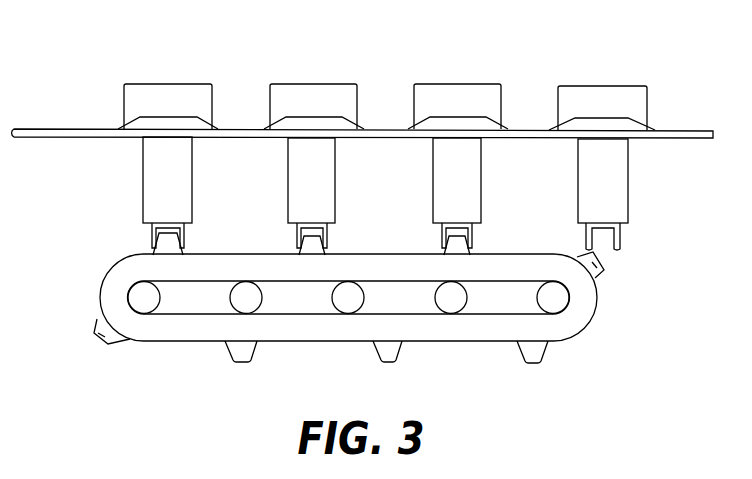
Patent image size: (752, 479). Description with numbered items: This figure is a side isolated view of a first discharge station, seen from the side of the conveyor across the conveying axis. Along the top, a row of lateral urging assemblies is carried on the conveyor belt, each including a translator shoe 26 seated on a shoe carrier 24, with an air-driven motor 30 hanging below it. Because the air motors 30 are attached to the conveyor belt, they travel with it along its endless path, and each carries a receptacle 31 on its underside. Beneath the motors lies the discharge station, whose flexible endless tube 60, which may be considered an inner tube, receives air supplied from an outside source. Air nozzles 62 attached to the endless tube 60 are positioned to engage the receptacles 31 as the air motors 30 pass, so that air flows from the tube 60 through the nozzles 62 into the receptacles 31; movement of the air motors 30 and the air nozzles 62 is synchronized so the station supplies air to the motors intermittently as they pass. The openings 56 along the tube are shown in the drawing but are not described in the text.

The shoe carrier 24 is at (442, 118).
The translator shoe 26 is at (458, 95).
The air-driven motor 30 is at (153, 175).
The receptacle 31 is at (157, 232).
The hole 56 is at (147, 303).
The flexible endless tube 60 is at (296, 330).
The air nozzle 62 is at (153, 250).